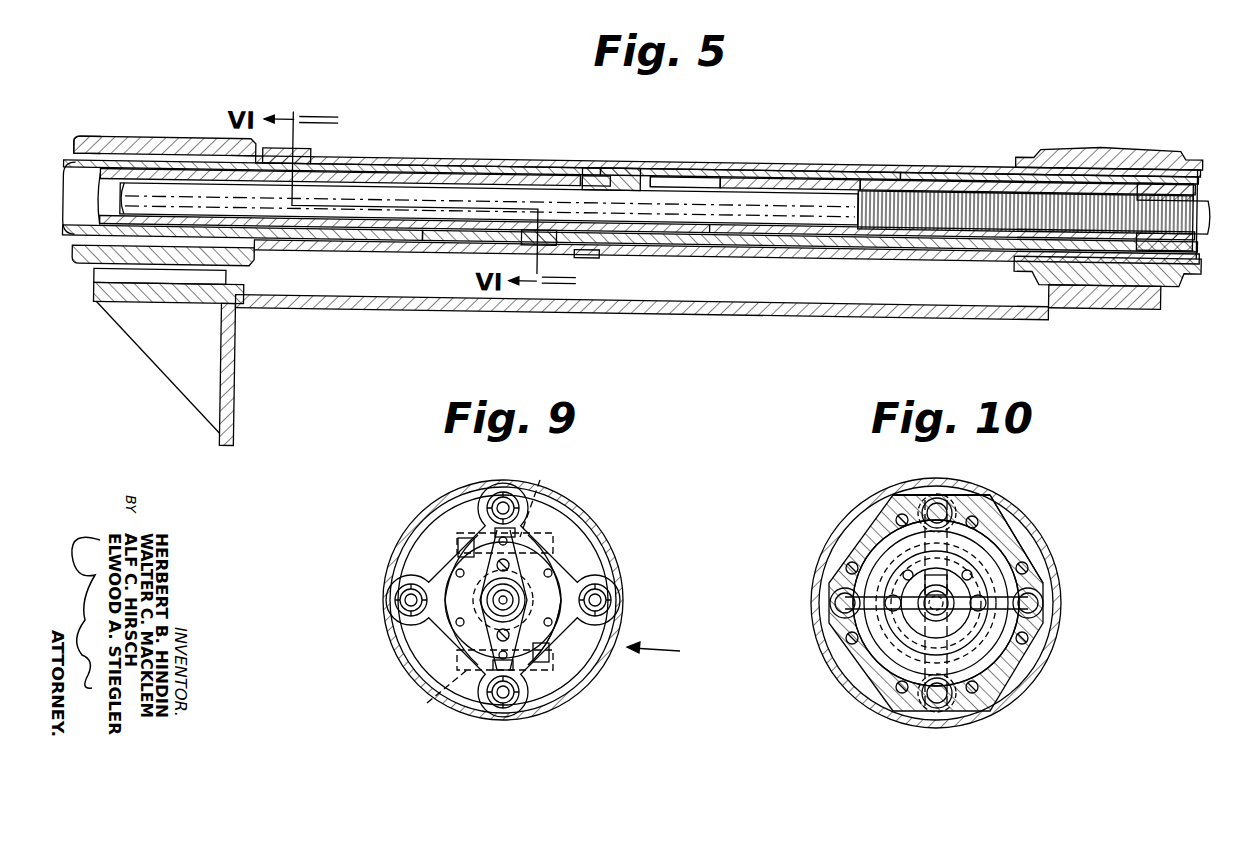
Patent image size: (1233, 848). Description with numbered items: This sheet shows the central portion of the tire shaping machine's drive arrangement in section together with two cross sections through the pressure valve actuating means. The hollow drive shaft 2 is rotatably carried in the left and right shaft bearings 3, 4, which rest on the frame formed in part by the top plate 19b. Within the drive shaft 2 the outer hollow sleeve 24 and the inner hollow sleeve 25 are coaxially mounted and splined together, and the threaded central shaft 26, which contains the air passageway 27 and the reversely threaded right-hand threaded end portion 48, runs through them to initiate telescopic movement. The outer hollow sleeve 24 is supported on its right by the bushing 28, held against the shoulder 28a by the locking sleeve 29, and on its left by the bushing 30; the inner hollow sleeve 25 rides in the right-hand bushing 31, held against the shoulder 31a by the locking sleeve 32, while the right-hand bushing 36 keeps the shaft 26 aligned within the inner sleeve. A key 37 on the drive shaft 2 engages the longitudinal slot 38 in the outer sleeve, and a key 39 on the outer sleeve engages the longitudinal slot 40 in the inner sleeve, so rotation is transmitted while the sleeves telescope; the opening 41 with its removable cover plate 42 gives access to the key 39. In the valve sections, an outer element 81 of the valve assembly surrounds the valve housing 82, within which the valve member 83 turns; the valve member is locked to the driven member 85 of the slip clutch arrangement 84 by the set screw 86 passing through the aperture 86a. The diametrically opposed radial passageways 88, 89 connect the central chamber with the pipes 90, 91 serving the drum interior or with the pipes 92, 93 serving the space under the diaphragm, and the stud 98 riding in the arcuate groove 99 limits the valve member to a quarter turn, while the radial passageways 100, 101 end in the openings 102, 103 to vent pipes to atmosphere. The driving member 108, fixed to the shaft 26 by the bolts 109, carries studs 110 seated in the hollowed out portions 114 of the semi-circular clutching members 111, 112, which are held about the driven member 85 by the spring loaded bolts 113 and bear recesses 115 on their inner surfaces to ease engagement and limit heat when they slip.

In FIG. 5, the hollow drive shaft 2 is at (491, 165).
In FIG. 5, the left shaft bearing 3 is at (160, 137).
In FIG. 5, the right shaft bearing 4 is at (1076, 150).
In FIG. 5, the top plate 19b is at (925, 311).
In FIG. 5, the outer hollow sleeve 24 is at (758, 175).
In FIG. 5, the inner hollow sleeve 25 is at (407, 180).
In FIG. 5, the threaded central shaft 26 is at (320, 215).
In FIG. 5, the passageway 27 is at (441, 180).
In FIG. 5, the bushing 28 is at (973, 170).
In FIG. 5, the shoulder 28a is at (955, 173).
In FIG. 5, the locking sleeve 29 is at (1140, 173).
In FIG. 5, the bushing 30 is at (97, 140).
In FIG. 5, the right-hand bushing 31 is at (650, 178).
In FIG. 5, the shoulder 31a is at (603, 178).
In FIG. 5, the locking sleeve 32 is at (716, 178).
In FIG. 5, the right-hand bushing 36 is at (612, 170).
In FIG. 5, the key 37 is at (291, 160).
In FIG. 5, the longitudinal slot 38 is at (350, 172).
In FIG. 5, the key 39 is at (550, 240).
In FIG. 5, the longitudinal slot 40 is at (403, 233).
In FIG. 5, the opening 41 is at (465, 235).
In FIG. 5, the removable cover plate 42 is at (580, 253).
In FIG. 5, the right-hand threaded end portion 48 is at (890, 198).
In FIG. 9, the housing 81 is at (478, 490).
In FIG. 10, the housing 81 is at (1018, 688).
In FIG. 9, the valve housing 82 is at (545, 523).
In FIG. 10, the valve housing 82 is at (1000, 543).
In FIG. 10, the valve member 83 is at (1005, 557).
In FIG. 9, the slip clutch arrangement 84 is at (665, 652).
In FIG. 9, the driven member 85 is at (465, 603).
In FIG. 10, the set screw 86 is at (917, 587).
In FIG. 10, the aperture 86a is at (997, 542).
In FIG. 10, the radial passageway 88 is at (900, 502).
In FIG. 10, the radial passageway 89 is at (893, 712).
In FIG. 9, the pipe 90 is at (505, 510).
In FIG. 10, the pipe 90 is at (940, 497).
In FIG. 9, the pipe 91 is at (503, 697).
In FIG. 10, the pipe 91 is at (943, 713).
In FIG. 9, the pipe 92 is at (410, 600).
In FIG. 10, the pipe 92 is at (1037, 598).
In FIG. 9, the pipe 93 is at (610, 597).
In FIG. 10, the pipe 93 is at (835, 607).
In FIG. 10, the stud 98 is at (967, 575).
In FIG. 10, the arcuate groove 99 is at (917, 572).
In FIG. 10, the radial passageway 100 is at (830, 640).
In FIG. 10, the radial passageway 101 is at (1042, 642).
In FIG. 10, the opening 102 is at (900, 603).
In FIG. 10, the opening 103 is at (1020, 670).
In FIG. 9, the driving member 108 is at (463, 583).
In FIG. 9, the bolts 109 is at (500, 540).
In FIG. 9, the studs 110 is at (497, 533).
In FIG. 9, the clutching member 111 is at (443, 607).
In FIG. 9, the clutching member 112 is at (565, 582).
In FIG. 9, the spring loaded bolts 113 is at (480, 537).
In FIG. 9, the hollowed out portion 114 is at (543, 484).
In FIG. 9, the recesses 115 is at (563, 537).